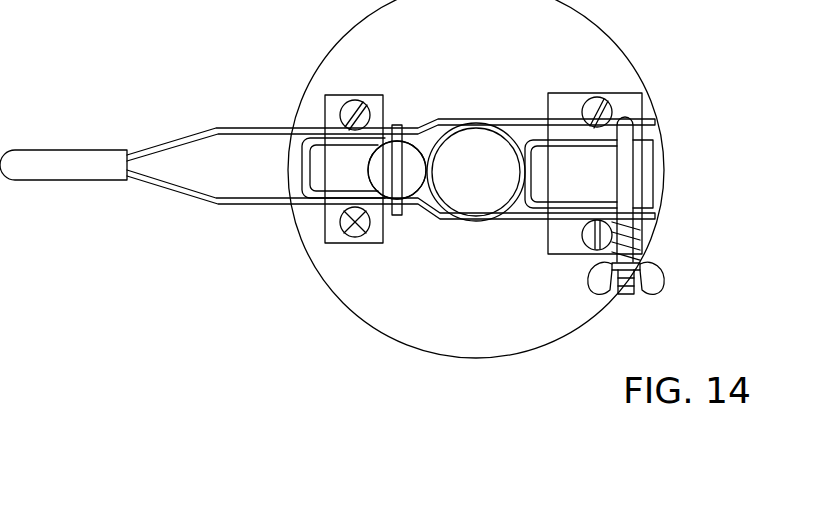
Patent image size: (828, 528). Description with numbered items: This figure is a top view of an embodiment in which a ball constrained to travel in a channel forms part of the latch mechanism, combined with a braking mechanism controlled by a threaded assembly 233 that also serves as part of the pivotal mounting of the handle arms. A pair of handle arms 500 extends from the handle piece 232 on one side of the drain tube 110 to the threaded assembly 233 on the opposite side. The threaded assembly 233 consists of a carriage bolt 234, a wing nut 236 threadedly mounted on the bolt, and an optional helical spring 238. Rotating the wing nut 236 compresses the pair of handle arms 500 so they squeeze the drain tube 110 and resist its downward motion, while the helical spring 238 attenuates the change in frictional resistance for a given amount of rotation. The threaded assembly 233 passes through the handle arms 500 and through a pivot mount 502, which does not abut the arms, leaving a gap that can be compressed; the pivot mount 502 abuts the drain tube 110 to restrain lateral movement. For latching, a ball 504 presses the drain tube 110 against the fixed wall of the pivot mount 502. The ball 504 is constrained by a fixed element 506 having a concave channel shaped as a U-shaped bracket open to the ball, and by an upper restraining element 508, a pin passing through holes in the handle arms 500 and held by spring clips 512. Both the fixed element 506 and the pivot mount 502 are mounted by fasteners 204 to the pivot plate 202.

The pivot plate 202 is at (426, 327).
The handle piece 232 is at (65, 150).
The pair of handle arms 500 is at (181, 158).
The fasteners 204 is at (350, 97).
The fixed element 506 is at (303, 163).
The upper restraining element 508 is at (393, 175).
The ball 504 is at (415, 155).
The spring clips 512 is at (405, 128).
The drain tube 110 is at (516, 210).
The pivot mount 502 is at (655, 137).
The threaded assembly 233 is at (703, 205).
The carriage bolt 234 is at (636, 173).
The helical spring 238 is at (650, 237).
The wing nut 236 is at (669, 278).